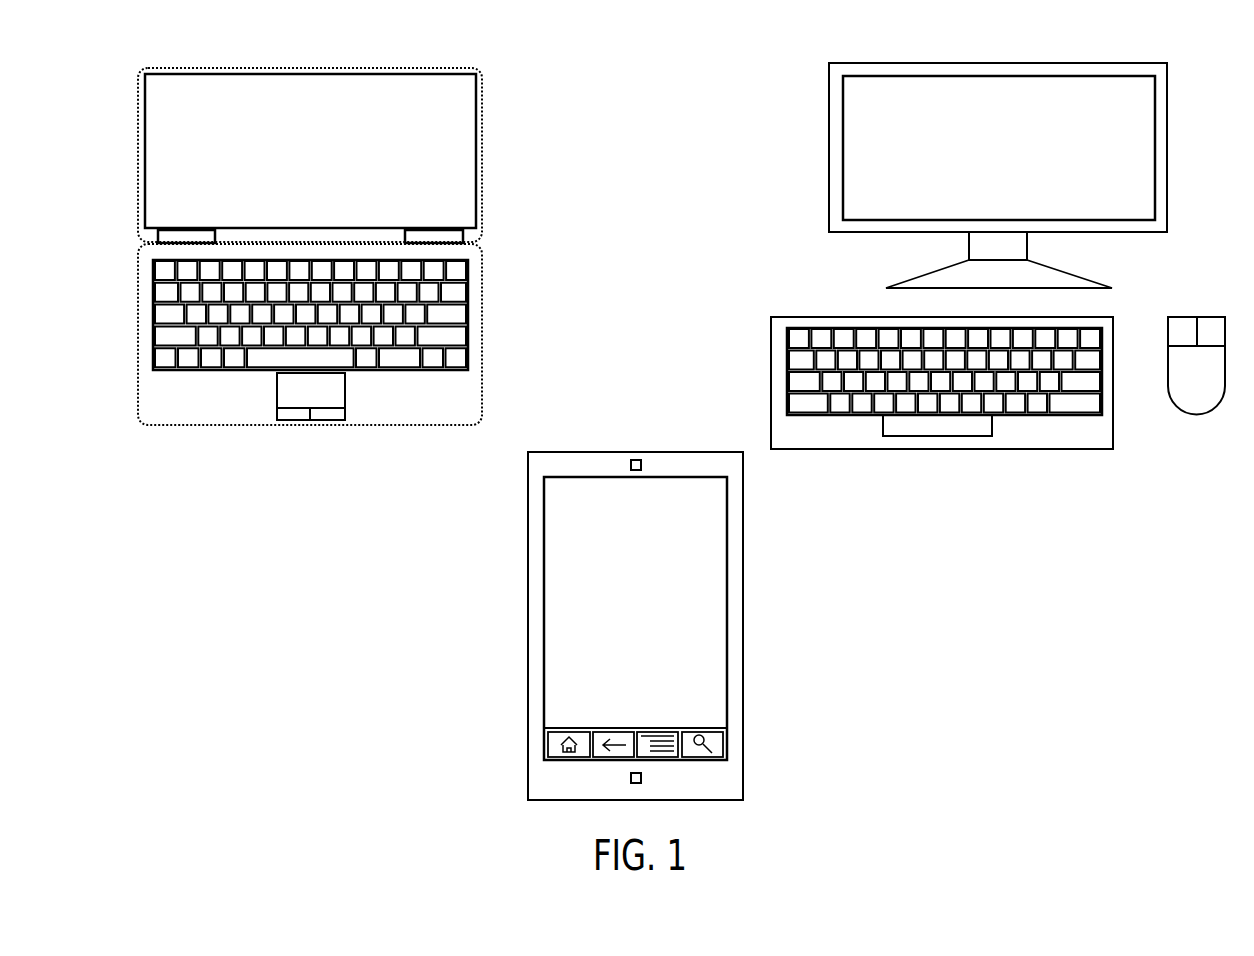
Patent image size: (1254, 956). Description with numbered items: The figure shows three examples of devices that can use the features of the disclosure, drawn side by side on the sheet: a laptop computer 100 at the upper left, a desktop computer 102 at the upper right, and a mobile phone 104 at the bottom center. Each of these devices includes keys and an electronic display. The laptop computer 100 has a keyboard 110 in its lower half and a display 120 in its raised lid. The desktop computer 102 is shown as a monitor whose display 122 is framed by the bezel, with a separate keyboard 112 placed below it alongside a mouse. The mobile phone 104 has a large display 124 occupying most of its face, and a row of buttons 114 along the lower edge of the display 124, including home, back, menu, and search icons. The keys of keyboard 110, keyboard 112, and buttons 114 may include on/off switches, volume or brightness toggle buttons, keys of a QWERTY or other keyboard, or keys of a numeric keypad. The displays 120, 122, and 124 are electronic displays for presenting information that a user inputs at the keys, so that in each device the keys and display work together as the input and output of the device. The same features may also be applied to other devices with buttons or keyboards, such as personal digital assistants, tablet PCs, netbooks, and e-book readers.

The laptop computer 100 is at (484, 137).
The display 120 is at (484, 178).
The keyboard 110 is at (484, 300).
The desktop computer 102 is at (829, 136).
The display 122 is at (843, 178).
The keyboard 112 is at (825, 328).
The mobile phone 104 is at (527, 550).
The display 124 is at (527, 598).
The buttons 114 is at (548, 746).